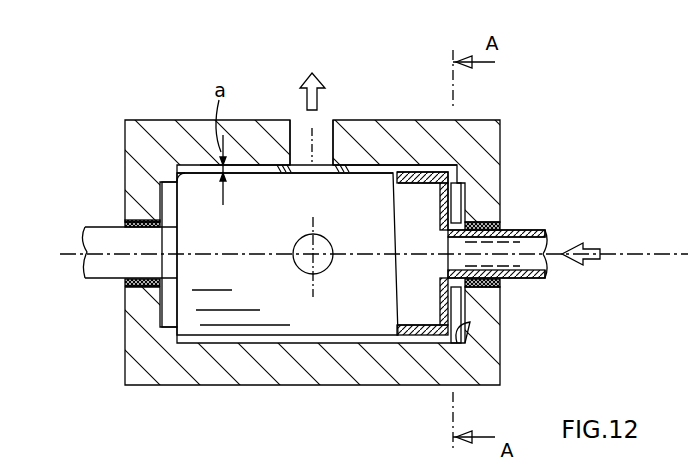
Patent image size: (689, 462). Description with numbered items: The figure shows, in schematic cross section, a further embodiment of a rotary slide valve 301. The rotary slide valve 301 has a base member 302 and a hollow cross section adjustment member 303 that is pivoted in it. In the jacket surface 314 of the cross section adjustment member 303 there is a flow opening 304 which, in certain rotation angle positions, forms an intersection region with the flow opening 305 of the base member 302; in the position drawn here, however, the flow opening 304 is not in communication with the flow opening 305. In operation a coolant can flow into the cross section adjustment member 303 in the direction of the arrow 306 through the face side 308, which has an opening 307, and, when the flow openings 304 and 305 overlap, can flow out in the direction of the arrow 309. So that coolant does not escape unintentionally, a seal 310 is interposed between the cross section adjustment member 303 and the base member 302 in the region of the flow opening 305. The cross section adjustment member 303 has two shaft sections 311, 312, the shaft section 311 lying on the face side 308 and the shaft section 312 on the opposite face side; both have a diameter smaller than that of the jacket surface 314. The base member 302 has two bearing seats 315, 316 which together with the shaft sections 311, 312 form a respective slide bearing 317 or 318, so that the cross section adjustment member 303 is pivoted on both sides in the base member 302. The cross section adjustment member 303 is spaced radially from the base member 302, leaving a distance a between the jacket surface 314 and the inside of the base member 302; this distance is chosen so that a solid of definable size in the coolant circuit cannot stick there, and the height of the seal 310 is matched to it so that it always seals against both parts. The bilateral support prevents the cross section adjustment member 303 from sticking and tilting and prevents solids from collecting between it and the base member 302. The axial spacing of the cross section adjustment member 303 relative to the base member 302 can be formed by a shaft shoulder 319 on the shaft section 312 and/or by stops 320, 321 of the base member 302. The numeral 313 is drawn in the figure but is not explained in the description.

The rotary slide valve 301 is at (96, 62).
The base member 302 is at (483, 130).
The cross section adjustment member 303 is at (245, 322).
The flow opening 304 is at (316, 272).
The flow opening 305 is at (333, 138).
The arrow 306 is at (594, 248).
The opening 307 is at (545, 268).
The face side 308 is at (452, 200).
The arrow 309 is at (303, 98).
The seal 310 is at (280, 165).
The shaft section 311 is at (505, 296).
The shaft section 312 is at (120, 285).
The flange 313 is at (173, 198).
The jacket surface 314 is at (308, 308).
The bearing seat 315 is at (487, 224).
The bearing seat 316 is at (140, 223).
The slide bearing 317 is at (504, 283).
The slide bearing 318 is at (120, 223).
The shaft shoulder 319 is at (168, 295).
The stop 320 is at (470, 360).
The stop 321 is at (193, 172).